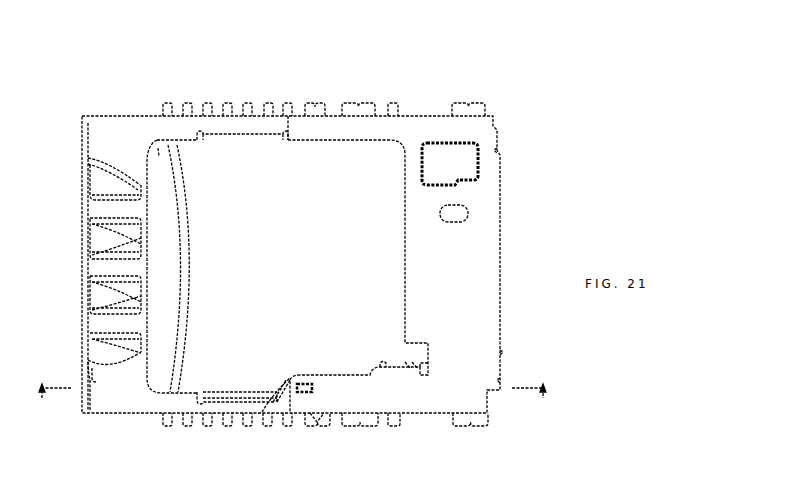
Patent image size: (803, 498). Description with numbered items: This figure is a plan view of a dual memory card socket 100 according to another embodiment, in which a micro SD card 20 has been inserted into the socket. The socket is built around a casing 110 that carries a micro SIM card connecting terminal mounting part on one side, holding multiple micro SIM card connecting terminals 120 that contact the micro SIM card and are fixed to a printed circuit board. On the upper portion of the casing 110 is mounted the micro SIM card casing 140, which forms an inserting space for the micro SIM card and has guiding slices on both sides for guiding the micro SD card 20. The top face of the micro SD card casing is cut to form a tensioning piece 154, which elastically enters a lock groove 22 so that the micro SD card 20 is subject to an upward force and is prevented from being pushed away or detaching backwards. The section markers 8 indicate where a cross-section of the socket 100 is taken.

The dual memory card socket 100 is at (216, 44).
The micro SD card 20 is at (152, 140).
The casing 110 is at (94, 262).
The micro SIM card connecting terminal 120 is at (92, 296).
The micro SIM card casing 140 is at (123, 402).
The lock groove 22 is at (280, 383).
The tensioning piece 154 is at (308, 393).
The section line 8 is at (292, 410).